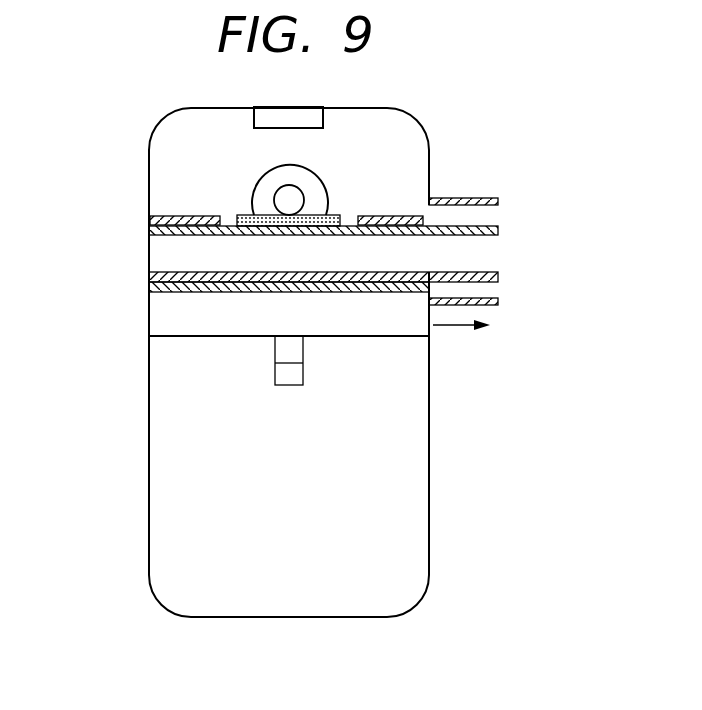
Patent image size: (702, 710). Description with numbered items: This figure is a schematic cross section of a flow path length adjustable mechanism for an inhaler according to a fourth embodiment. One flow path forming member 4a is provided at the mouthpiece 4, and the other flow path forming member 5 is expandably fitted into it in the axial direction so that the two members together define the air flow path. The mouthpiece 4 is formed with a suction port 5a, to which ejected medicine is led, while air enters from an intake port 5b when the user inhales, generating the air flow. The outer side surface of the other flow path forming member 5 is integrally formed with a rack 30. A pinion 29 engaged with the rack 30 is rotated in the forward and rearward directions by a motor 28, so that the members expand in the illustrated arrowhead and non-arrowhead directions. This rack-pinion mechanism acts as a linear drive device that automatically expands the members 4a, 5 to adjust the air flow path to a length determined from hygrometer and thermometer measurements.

The mouthpiece 4 is at (502, 300).
The flow path forming member 4a is at (188, 276).
The flow path forming member 5 is at (193, 297).
The suction port 5a is at (499, 253).
The intake port 5b is at (149, 249).
The motor 28 is at (306, 186).
The pinion 29 is at (287, 200).
The rack 30 is at (340, 211).